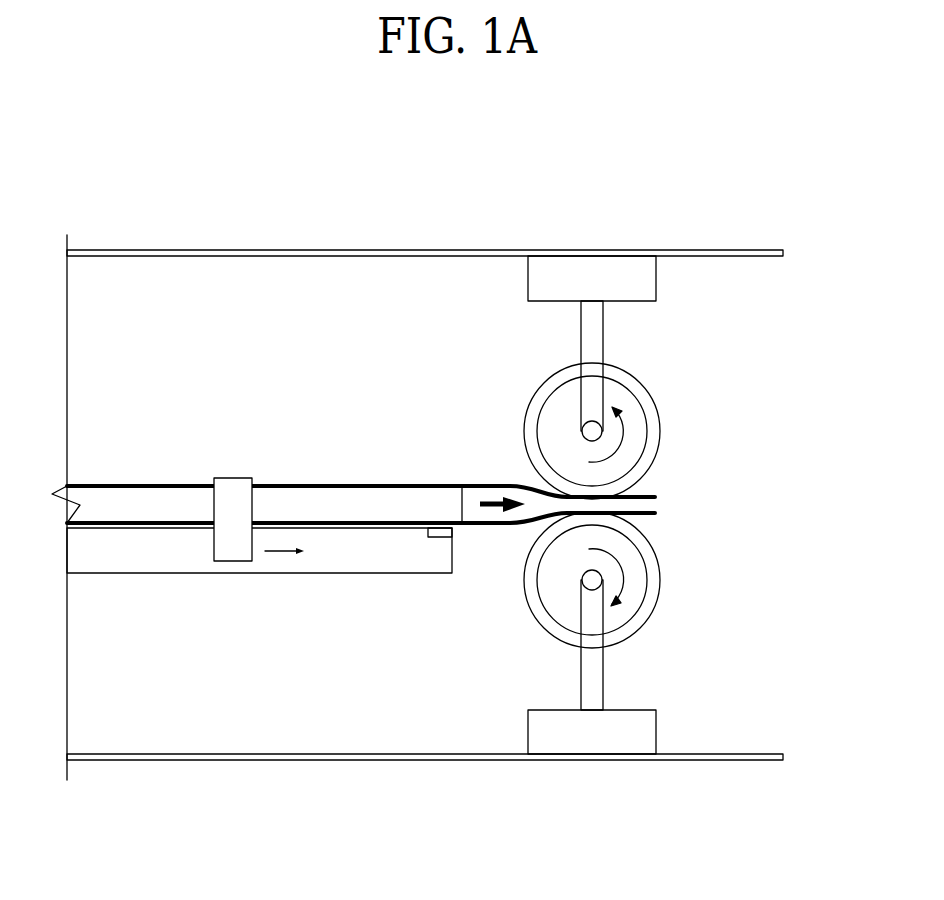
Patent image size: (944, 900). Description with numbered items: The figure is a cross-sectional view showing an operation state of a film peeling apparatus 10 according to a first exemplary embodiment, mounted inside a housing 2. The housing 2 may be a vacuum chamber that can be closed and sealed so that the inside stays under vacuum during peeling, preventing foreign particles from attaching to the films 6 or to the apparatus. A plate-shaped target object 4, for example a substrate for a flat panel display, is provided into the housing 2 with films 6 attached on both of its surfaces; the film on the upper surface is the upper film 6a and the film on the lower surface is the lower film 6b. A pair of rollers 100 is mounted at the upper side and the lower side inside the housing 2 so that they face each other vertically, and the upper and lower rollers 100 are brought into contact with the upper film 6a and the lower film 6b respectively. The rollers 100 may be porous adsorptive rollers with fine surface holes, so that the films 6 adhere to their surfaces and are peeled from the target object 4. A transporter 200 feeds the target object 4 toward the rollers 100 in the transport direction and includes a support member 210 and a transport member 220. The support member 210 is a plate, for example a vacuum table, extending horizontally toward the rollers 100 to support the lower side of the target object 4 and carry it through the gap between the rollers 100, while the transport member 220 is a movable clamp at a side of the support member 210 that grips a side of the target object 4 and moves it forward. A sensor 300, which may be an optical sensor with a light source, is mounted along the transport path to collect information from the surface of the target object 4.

The film peeling apparatus 10 is at (266, 191).
The housing 2 is at (570, 252).
The target object 4 is at (135, 493).
The films 6 is at (217, 391).
The upper film 6a is at (189, 487).
The lower film 6b is at (192, 523).
The pair of rollers 100 is at (630, 447).
The transporter 200 is at (163, 657).
The support member 210 is at (150, 560).
The transport member 220 is at (239, 560).
The sensor 300 is at (440, 534).